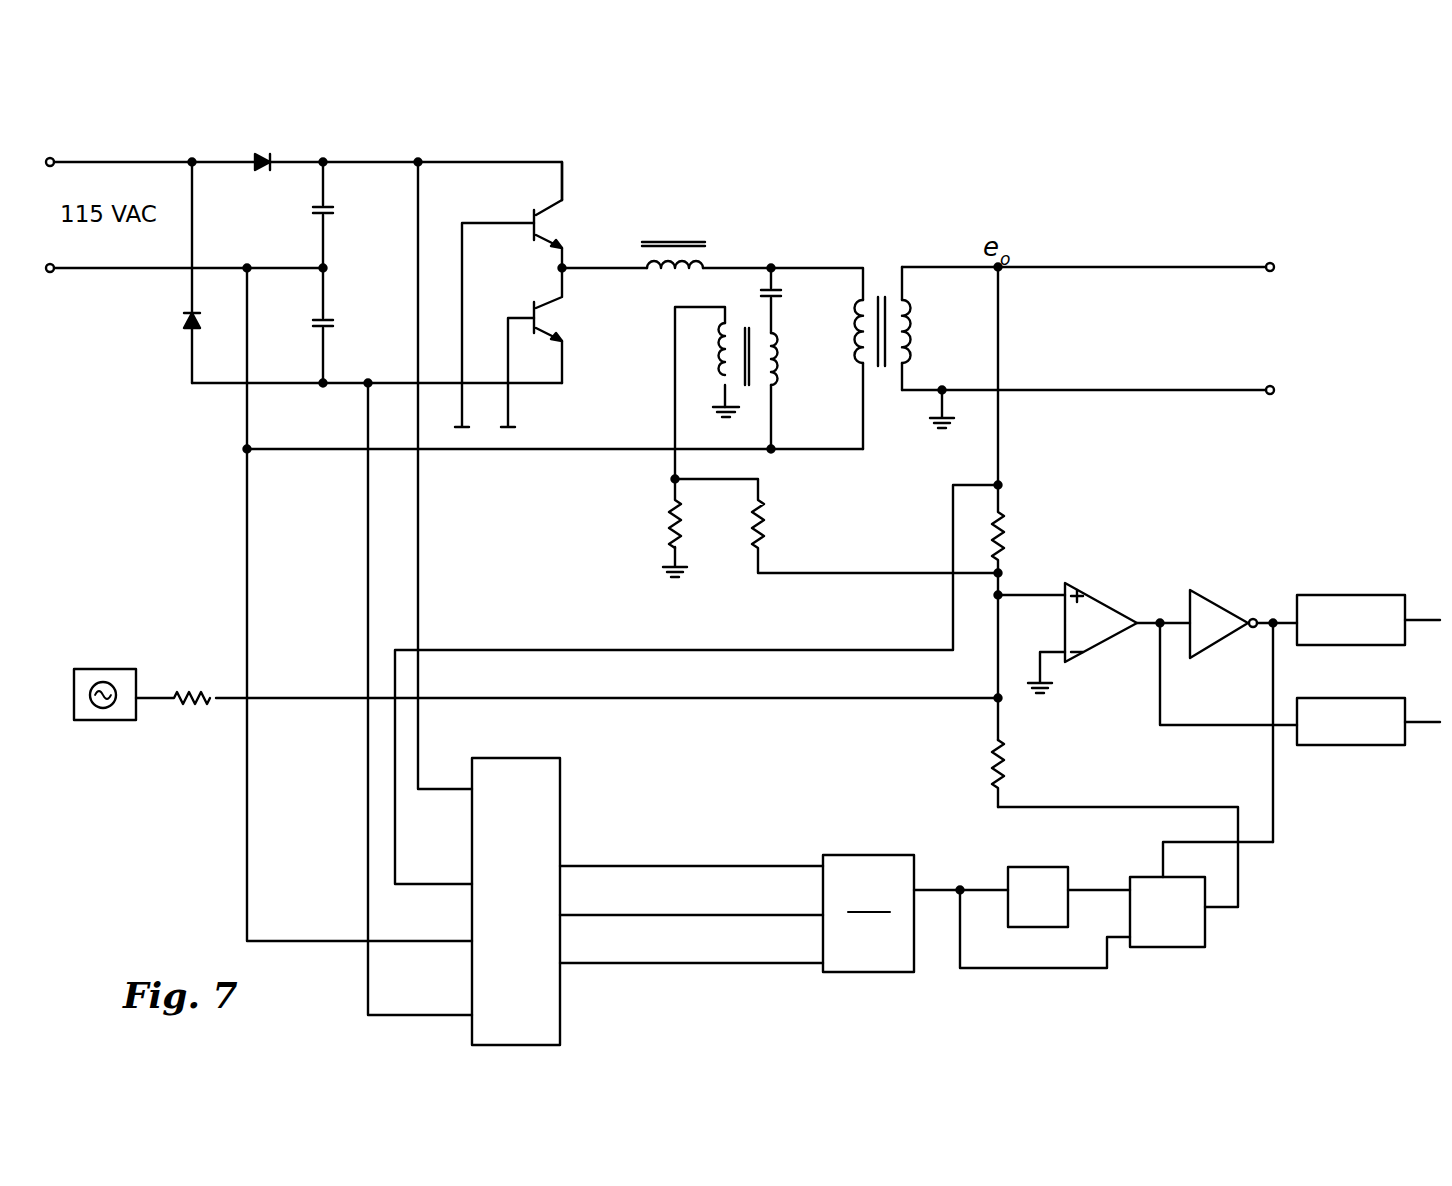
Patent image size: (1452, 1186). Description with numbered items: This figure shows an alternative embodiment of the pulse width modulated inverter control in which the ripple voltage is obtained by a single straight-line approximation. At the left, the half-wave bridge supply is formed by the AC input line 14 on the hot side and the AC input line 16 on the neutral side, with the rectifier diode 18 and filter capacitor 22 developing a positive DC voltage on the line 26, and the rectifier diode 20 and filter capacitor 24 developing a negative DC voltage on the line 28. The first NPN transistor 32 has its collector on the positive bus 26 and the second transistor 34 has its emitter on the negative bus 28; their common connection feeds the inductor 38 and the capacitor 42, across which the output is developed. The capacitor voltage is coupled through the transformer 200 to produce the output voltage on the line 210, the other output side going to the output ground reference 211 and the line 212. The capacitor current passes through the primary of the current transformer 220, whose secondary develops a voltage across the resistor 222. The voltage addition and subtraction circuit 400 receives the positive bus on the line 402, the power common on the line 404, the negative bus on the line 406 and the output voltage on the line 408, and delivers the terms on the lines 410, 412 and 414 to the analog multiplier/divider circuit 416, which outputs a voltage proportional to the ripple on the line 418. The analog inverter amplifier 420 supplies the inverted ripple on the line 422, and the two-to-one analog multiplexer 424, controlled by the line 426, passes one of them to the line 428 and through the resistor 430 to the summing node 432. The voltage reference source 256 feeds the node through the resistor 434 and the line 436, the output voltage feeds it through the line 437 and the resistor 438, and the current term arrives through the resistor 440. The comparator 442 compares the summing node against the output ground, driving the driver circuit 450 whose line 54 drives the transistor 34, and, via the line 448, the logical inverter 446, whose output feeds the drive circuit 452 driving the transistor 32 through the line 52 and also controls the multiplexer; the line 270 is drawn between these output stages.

The AC input line 14 is at (140, 162).
The AC input line 16 is at (93, 270).
The rectifier diode 18 is at (258, 162).
The rectifier diode 20 is at (185, 318).
The filter capacitor 22 is at (308, 210).
The filter capacitor 24 is at (338, 325).
The line (positive DC bus) 26 is at (487, 162).
The line (negative DC bus) 28 is at (321, 385).
The first NPN transistor 32 is at (556, 226).
The second transistor 34 is at (548, 318).
The inductor 38 is at (679, 242).
The capacitor 42 is at (782, 296).
The line 52 is at (463, 262).
The line 54 is at (510, 405).
The transformer 200 is at (883, 292).
The line 210 is at (1182, 267).
The output ground reference 211 is at (713, 420).
The line 212 is at (1165, 390).
The current transformer 220 is at (770, 400).
The resistor 222 is at (670, 522).
The voltage reference source 256 is at (106, 668).
The line to multiplexer 270 is at (1275, 815).
The voltage addition and subtraction circuit 400 is at (560, 772).
The line 402 is at (421, 548).
The line 404 is at (246, 556).
The line 406 is at (362, 545).
The line 408 is at (741, 652).
The line 410 is at (744, 866).
The line 412 is at (747, 915).
The line 414 is at (746, 963).
The analog multiplier/divider circuit 416 is at (887, 855).
The line 418 is at (947, 890).
The analog inverter amplifier 420 is at (1036, 867).
The line 422 is at (1101, 890).
The 2:1 analog multiplexer 424 is at (1208, 940).
The line 426 is at (1265, 848).
The line 428 is at (1138, 807).
The resistor 430 is at (1011, 757).
The summing node 432 is at (1022, 592).
The resistor 434 is at (192, 707).
The line 436 is at (722, 698).
The line 437 is at (1000, 320).
The resistor 438 is at (1012, 533).
The resistor 440 is at (764, 525).
The comparator 442 is at (1100, 602).
The logical inverter 446 is at (1222, 606).
The line 448 is at (1162, 632).
The driver circuit 450 is at (1341, 745).
The drive circuit 452 is at (1355, 595).